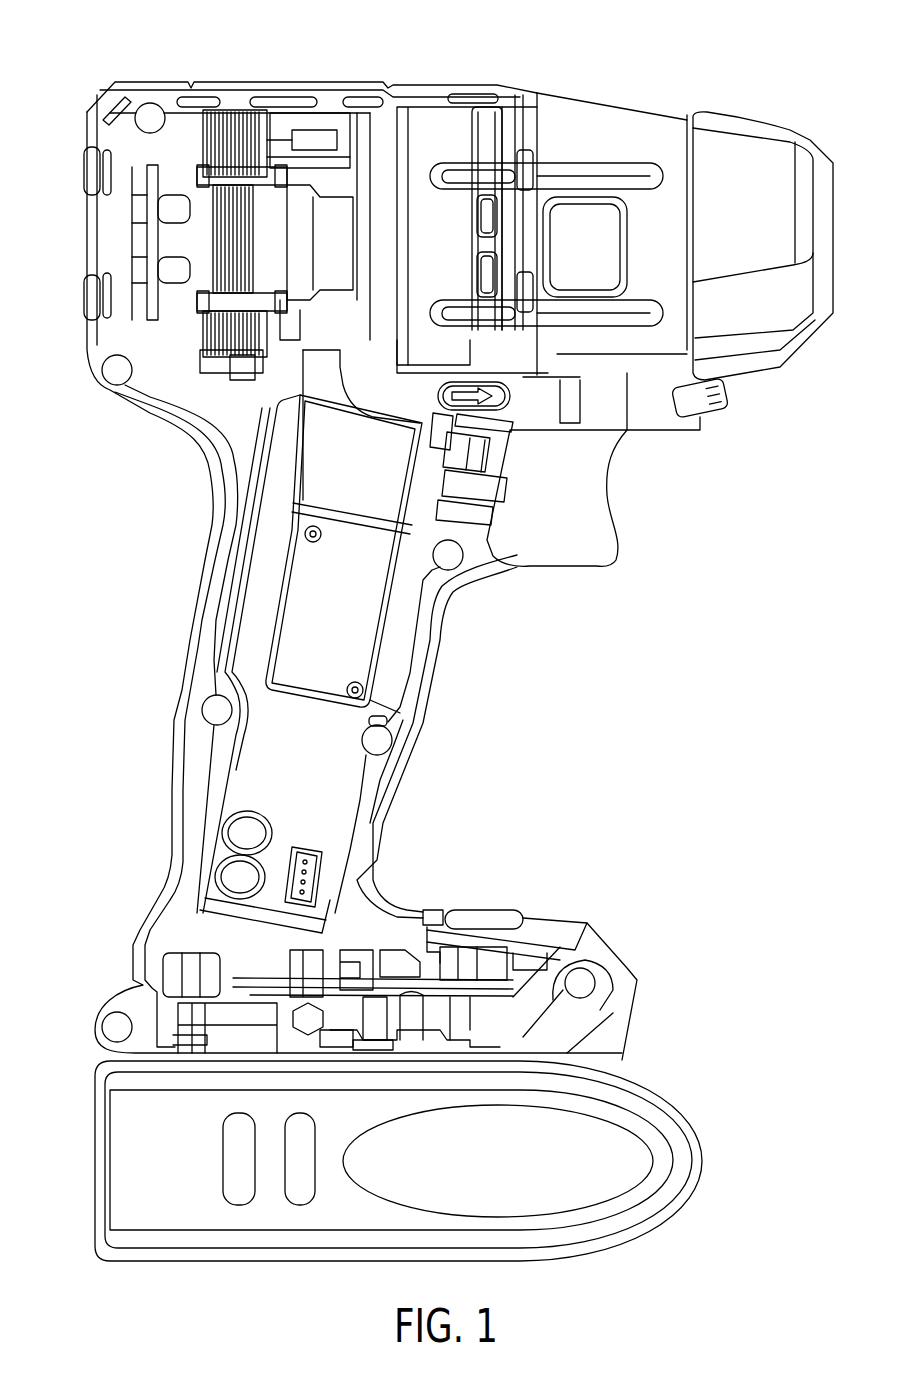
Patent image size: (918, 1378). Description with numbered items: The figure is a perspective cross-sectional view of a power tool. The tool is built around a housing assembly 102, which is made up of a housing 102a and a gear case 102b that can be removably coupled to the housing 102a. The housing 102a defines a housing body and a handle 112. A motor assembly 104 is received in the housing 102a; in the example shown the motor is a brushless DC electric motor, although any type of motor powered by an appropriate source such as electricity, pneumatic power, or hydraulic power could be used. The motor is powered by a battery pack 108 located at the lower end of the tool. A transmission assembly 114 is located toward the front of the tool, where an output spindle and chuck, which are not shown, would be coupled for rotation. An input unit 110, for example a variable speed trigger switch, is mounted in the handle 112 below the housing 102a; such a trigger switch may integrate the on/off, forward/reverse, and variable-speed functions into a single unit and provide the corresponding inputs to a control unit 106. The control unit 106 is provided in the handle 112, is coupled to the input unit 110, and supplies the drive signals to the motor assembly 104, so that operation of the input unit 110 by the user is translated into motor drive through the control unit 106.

The housing assembly 102 is at (458, 527).
The housing 102a is at (233, 102).
The gear case 102b is at (552, 107).
The motor assembly 104 is at (323, 119).
The control unit 106 is at (263, 587).
The battery pack 108 is at (94, 1155).
The input unit 110 is at (587, 553).
The handle 112 is at (180, 806).
The transmission assembly 114 is at (506, 112).